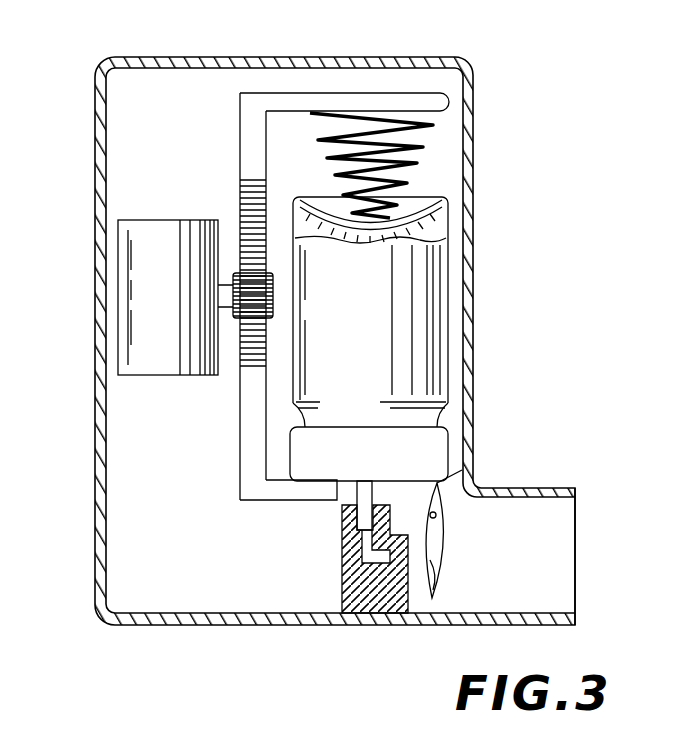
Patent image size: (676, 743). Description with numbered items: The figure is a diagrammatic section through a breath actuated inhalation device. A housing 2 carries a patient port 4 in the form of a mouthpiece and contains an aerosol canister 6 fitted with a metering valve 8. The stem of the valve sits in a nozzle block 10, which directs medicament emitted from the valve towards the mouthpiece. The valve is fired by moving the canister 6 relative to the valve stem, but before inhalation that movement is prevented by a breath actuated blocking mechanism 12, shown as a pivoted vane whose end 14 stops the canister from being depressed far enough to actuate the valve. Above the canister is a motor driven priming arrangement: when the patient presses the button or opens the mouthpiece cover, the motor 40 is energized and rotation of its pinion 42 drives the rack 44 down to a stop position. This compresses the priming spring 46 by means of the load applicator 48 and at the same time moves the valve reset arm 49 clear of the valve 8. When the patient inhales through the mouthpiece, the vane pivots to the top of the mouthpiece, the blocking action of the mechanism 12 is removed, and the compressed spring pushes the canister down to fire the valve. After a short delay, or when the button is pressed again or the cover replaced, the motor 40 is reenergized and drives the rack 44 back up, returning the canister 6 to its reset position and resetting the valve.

The housing 2 is at (142, 57).
The patient port 4 is at (558, 538).
The aerosol canister 6 is at (438, 322).
The metering valve 8 is at (372, 492).
The nozzle block 10 is at (368, 600).
The breath actuated blocking mechanism 12 is at (444, 615).
The end of vane 14 is at (440, 484).
The motor 40 is at (130, 305).
The pinion 42 is at (275, 296).
The rack 44 is at (245, 180).
The priming spring 46 is at (400, 150).
The load applicator 48 is at (410, 103).
The valve reset arm 49 is at (285, 498).